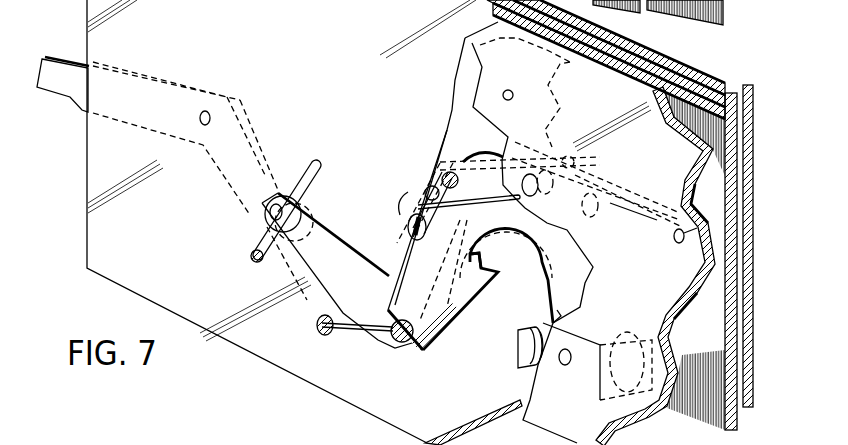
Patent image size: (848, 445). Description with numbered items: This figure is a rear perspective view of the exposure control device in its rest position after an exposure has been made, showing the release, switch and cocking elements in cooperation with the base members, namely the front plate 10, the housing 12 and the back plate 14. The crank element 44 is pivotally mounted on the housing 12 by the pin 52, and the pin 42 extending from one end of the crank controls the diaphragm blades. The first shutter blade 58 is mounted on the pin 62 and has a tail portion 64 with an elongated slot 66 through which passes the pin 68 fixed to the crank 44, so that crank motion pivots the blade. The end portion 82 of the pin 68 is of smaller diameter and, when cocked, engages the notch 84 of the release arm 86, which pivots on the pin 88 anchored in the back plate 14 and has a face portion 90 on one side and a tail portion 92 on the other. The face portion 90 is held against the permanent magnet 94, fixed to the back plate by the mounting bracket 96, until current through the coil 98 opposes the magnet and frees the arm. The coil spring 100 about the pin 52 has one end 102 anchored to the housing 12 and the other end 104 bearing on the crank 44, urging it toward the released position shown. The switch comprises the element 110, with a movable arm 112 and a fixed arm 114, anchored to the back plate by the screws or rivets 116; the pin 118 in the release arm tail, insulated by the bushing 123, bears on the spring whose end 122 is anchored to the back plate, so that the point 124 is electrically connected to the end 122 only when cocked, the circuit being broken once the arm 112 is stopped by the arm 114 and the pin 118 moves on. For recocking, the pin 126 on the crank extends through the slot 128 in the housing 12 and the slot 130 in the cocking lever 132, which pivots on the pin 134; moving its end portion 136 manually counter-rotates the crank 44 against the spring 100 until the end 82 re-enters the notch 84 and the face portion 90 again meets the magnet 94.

The front plate 10 is at (687, 83).
The housing 12 is at (647, 65).
The back plate 14 is at (617, 33).
The pin 42 is at (575, 160).
The crank element 44 is at (318, 296).
The pin 52 is at (392, 337).
The first shutter blade 58 is at (472, 72).
The pin 62 is at (510, 90).
The tail portion 64 is at (405, 253).
The elongated slot 66 is at (405, 228).
The pin 68 is at (445, 168).
The end portion 82 is at (425, 187).
The notch 84 is at (490, 205).
The release arm 86 is at (516, 253).
The pin 88 is at (530, 197).
The face portion 90 is at (463, 323).
The tail portion 92 is at (698, 308).
The permanent magnet 94 is at (528, 340).
The mounting bracket 96 is at (557, 295).
The coil 98 is at (592, 345).
The coil spring 100 is at (355, 338).
The end 102 is at (317, 327).
The end 104 is at (523, 240).
The element 110 is at (685, 243).
The movable arm 112 is at (633, 208).
The fixed arm 114 is at (632, 230).
The screws or rivets 116 is at (705, 213).
The pin 118 is at (580, 202).
The end 122 is at (420, 203).
The bushing 123 is at (600, 210).
The point 124 is at (663, 307).
The pin 126 is at (275, 212).
The slot 128 is at (262, 243).
The slot 130 is at (268, 142).
The cocking lever 132 is at (117, 87).
The pin 134 is at (205, 111).
The end portion 136 is at (62, 78).